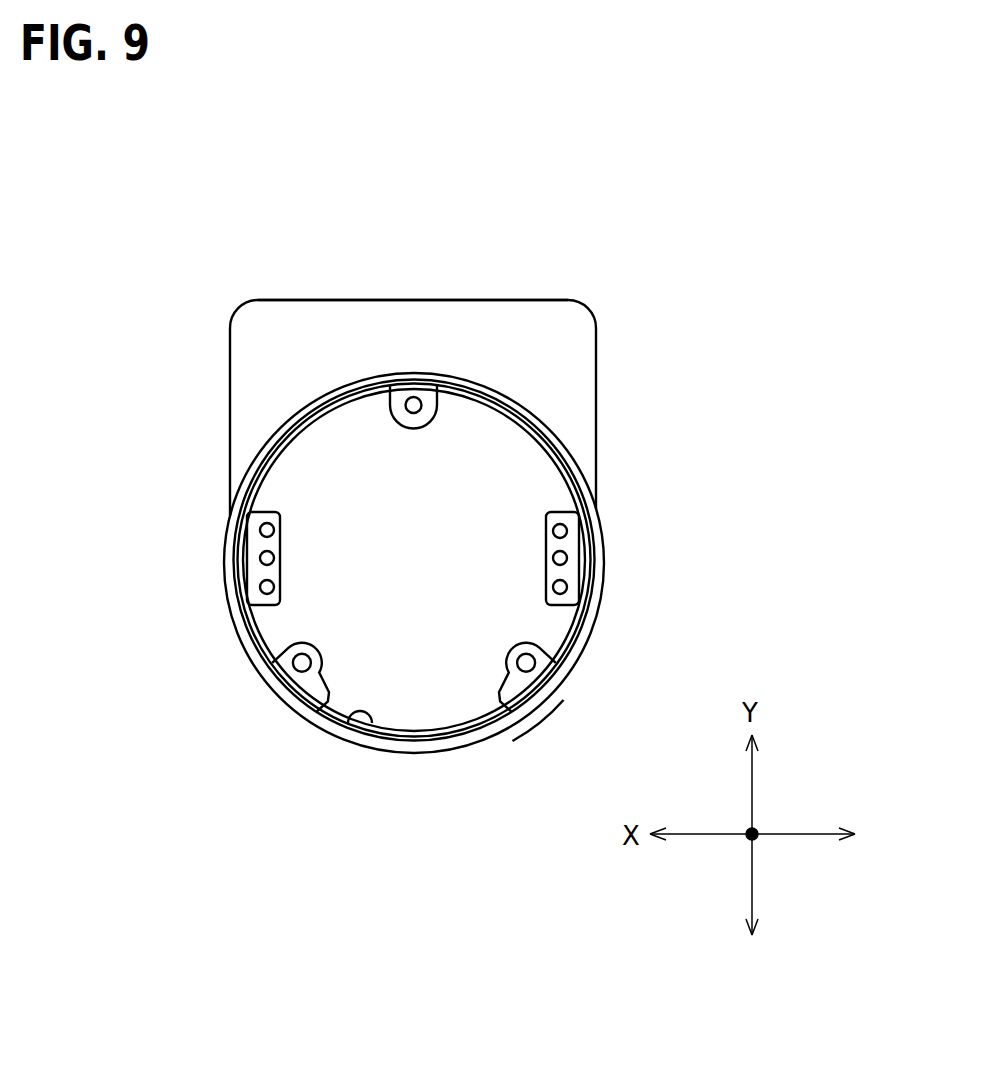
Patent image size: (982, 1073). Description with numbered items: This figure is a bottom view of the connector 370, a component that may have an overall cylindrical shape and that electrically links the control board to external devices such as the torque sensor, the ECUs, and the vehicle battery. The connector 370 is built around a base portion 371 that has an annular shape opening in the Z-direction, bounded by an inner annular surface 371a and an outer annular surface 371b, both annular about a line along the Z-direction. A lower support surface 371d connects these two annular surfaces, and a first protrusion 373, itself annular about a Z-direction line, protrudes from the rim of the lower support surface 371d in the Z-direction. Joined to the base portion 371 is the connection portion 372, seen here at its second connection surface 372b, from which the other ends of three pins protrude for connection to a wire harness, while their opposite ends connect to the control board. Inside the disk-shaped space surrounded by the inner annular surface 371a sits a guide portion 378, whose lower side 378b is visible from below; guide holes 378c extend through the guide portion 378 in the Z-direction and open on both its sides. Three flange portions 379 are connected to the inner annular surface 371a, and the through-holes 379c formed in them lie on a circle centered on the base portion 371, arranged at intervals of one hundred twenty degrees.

The connector 370 is at (700, 236).
The base portion 371 is at (606, 560).
The inner annular surface 371a is at (362, 716).
The outer annular surface 371b is at (515, 728).
The lower support surface 371d is at (570, 466).
The connection portion 372 is at (597, 338).
The second connection surface 372b is at (512, 316).
The first protrusion 373 is at (592, 598).
The guide portion 378 is at (256, 506).
The lower side 378b is at (258, 557).
The guide hole 378c is at (265, 587).
The flange portion 379 is at (433, 418).
The through-hole 379c is at (522, 660).